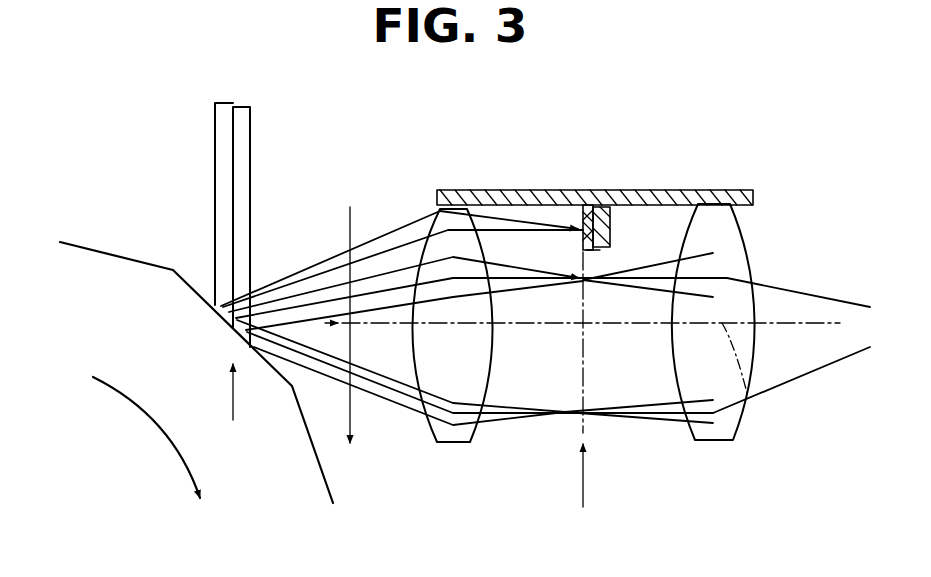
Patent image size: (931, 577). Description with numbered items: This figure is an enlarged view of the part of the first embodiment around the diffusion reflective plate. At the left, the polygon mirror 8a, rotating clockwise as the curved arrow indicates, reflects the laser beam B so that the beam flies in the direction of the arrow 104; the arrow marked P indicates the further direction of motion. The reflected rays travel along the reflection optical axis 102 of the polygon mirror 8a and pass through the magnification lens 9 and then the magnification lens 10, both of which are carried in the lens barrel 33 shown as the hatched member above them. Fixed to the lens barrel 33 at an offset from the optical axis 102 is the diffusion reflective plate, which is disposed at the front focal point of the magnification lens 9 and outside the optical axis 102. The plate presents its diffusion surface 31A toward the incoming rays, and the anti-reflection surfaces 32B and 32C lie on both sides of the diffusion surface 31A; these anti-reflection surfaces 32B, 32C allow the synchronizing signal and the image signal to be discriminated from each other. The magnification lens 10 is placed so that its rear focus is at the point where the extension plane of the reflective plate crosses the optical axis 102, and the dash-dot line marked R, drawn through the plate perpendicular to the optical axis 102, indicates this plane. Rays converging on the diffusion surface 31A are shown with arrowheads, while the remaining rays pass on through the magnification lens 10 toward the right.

The polygon mirror 8a is at (113, 253).
The laser beam B is at (242, 134).
The direction arrow P is at (233, 409).
The arrow 104 is at (349, 207).
The magnification lens 9 is at (445, 202).
The lens barrel 33 is at (668, 193).
The diffusion surface 31A is at (578, 214).
The anti-reflection surface 32B is at (610, 224).
The anti-reflection surface 32C is at (592, 251).
The reference axis R is at (587, 396).
The magnification lens 10 is at (713, 215).
The optical axis 102 is at (748, 397).